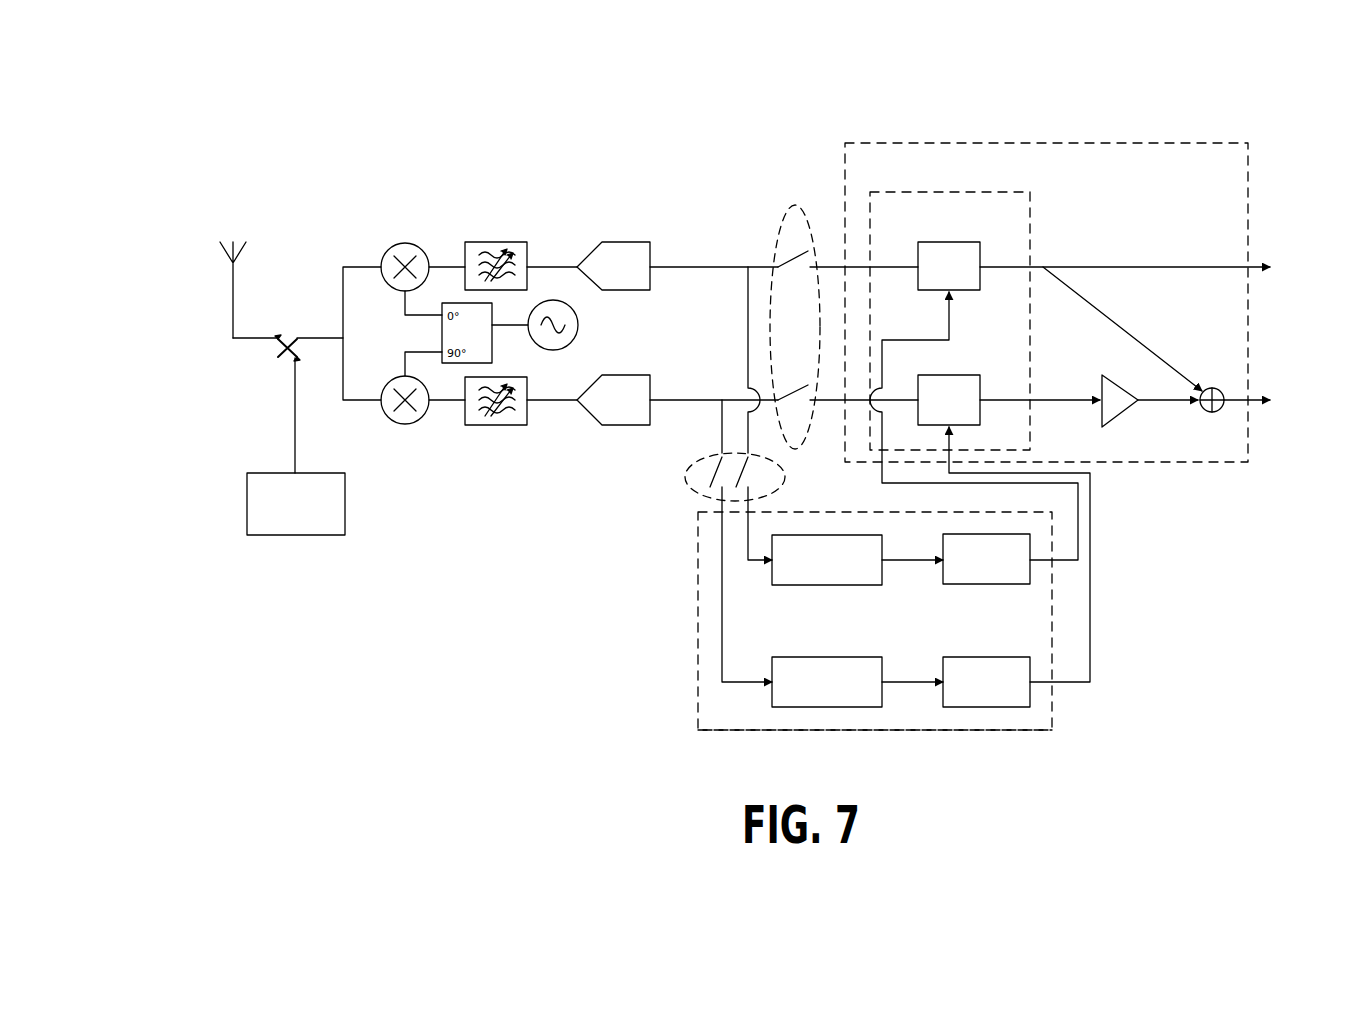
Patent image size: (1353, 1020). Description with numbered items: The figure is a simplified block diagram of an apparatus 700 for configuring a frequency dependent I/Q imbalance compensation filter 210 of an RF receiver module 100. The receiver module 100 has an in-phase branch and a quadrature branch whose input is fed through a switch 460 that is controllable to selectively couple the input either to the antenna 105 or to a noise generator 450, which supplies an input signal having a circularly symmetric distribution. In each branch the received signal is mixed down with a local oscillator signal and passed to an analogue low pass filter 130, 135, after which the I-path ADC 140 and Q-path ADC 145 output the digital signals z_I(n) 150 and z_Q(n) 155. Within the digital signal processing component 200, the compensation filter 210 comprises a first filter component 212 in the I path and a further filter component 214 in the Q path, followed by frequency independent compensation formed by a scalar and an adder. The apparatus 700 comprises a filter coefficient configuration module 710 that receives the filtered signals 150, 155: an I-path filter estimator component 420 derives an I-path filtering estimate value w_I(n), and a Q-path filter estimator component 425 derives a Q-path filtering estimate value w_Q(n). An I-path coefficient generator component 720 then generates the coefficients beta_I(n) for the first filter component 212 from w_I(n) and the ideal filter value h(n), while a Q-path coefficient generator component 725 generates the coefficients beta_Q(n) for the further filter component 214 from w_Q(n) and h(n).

The RF receiver module 100 is at (336, 118).
The antenna 105 is at (232, 290).
The I-branch analogue low pass filter 130 is at (506, 213).
The Q-branch analogue low pass filter 135 is at (498, 450).
The I-path ADC 140 is at (632, 240).
The Q-path ADC 145 is at (633, 425).
The digital I-path signal z_I(n) 150 is at (688, 250).
The digital Q-path signal z_Q(n) 155 is at (690, 378).
The digital signal processing component 200 is at (1093, 143).
The FD I/Q imbalance compensation filter 210 is at (978, 192).
The first filter component 212 is at (953, 242).
The further filter component 214 is at (957, 375).
The I-path filter estimator component 420 is at (807, 585).
The Q-path filter estimator component 425 is at (808, 657).
The noise generator 450 is at (247, 493).
The switch 460 is at (285, 338).
The apparatus 700 is at (357, 648).
The filter coefficient configuration module 710 is at (698, 680).
The I-path coefficient generator component 720 is at (978, 585).
The Q-path coefficient generator component 725 is at (980, 657).